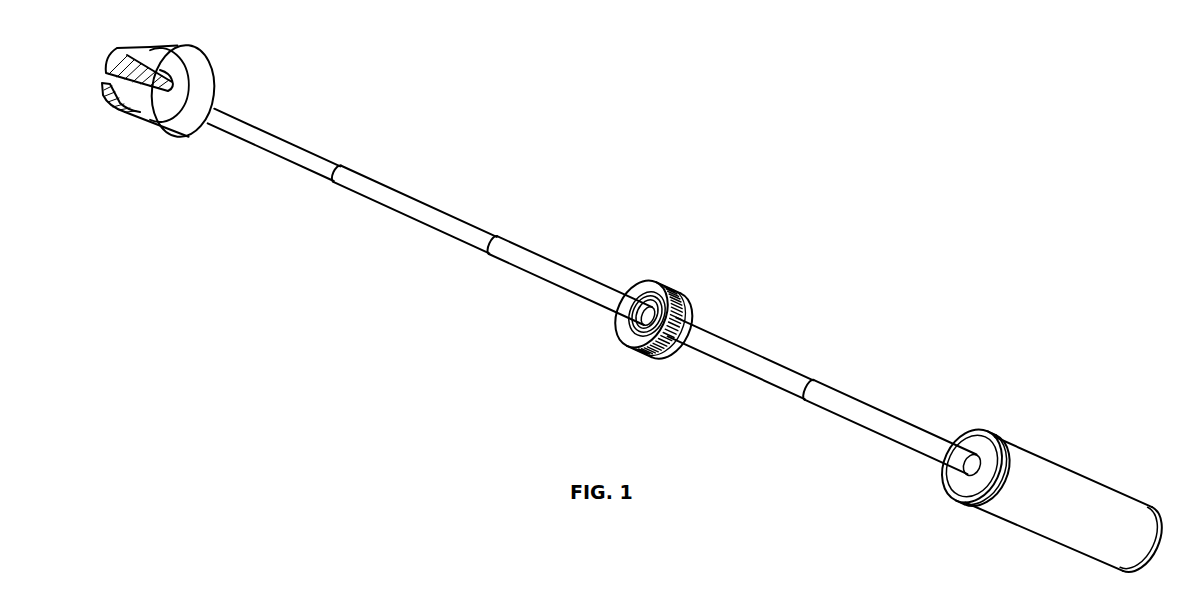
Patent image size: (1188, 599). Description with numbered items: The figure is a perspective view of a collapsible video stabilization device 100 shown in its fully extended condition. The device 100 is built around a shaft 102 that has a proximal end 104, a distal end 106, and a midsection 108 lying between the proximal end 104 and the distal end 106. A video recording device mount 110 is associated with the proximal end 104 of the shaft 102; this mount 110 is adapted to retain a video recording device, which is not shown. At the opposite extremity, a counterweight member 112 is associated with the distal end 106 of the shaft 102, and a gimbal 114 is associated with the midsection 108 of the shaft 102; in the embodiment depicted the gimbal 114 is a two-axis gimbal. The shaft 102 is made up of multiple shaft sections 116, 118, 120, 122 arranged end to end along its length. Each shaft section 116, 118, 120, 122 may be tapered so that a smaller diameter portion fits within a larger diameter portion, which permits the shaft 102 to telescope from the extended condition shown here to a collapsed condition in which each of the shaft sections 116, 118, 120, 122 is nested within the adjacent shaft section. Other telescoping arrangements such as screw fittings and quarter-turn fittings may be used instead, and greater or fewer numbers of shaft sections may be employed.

The video stabilization device 100 is at (721, 83).
The shaft 102 is at (596, 294).
The proximal end 104 is at (215, 104).
The distal end 106 is at (944, 436).
The midsection 108 is at (613, 286).
The video recording device mount 110 is at (171, 49).
The counterweight member 112 is at (1065, 466).
The gimbal 114 is at (661, 363).
The shaft section 116 is at (283, 140).
The shaft section 118 is at (362, 199).
The shaft section 120 is at (545, 283).
The shaft section 122 is at (846, 396).